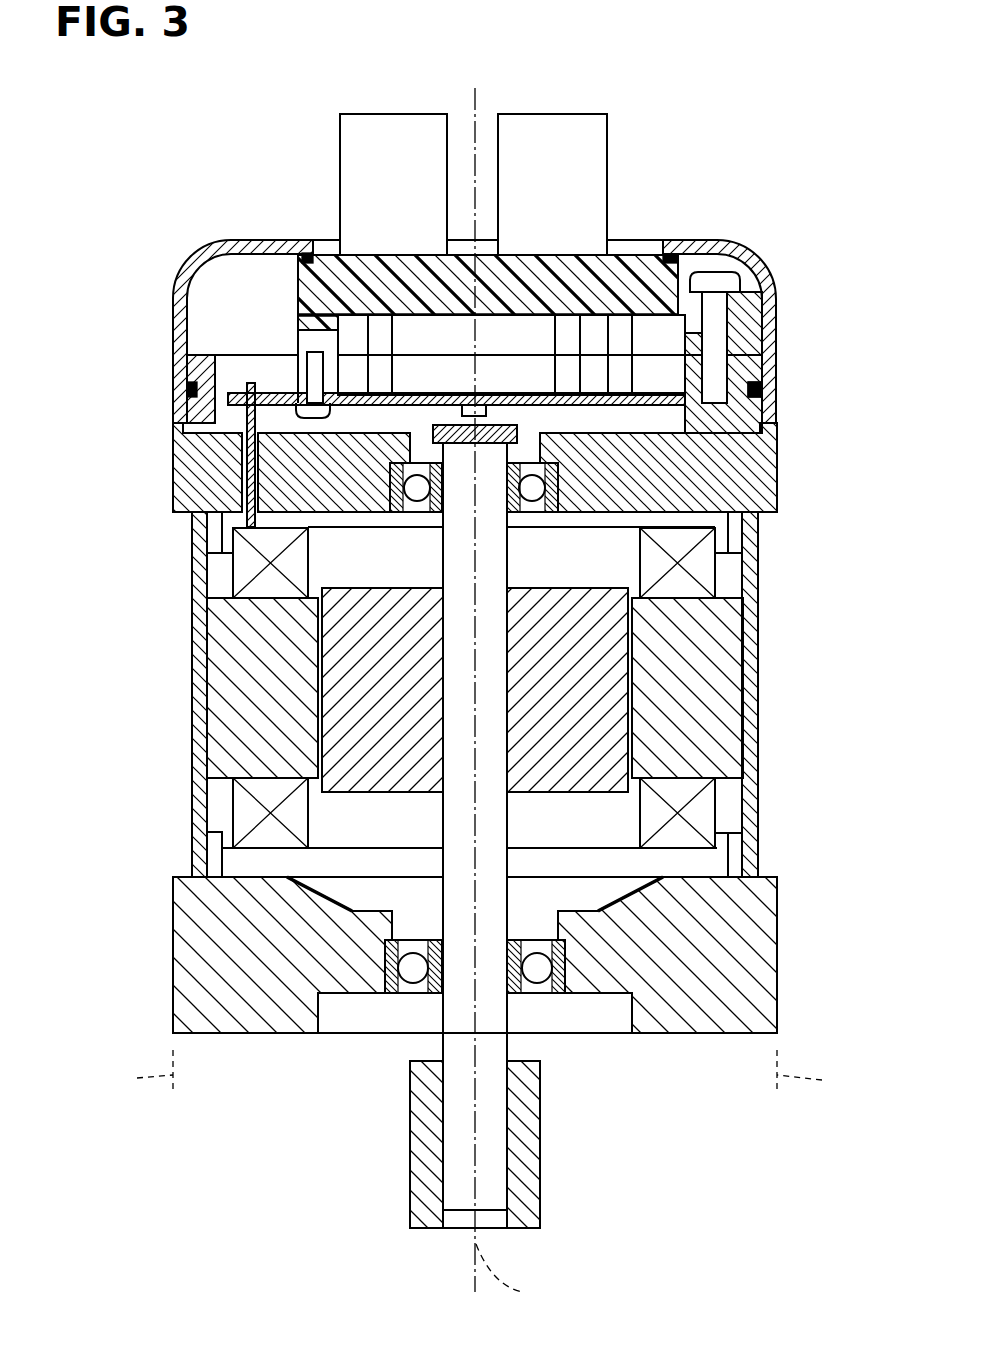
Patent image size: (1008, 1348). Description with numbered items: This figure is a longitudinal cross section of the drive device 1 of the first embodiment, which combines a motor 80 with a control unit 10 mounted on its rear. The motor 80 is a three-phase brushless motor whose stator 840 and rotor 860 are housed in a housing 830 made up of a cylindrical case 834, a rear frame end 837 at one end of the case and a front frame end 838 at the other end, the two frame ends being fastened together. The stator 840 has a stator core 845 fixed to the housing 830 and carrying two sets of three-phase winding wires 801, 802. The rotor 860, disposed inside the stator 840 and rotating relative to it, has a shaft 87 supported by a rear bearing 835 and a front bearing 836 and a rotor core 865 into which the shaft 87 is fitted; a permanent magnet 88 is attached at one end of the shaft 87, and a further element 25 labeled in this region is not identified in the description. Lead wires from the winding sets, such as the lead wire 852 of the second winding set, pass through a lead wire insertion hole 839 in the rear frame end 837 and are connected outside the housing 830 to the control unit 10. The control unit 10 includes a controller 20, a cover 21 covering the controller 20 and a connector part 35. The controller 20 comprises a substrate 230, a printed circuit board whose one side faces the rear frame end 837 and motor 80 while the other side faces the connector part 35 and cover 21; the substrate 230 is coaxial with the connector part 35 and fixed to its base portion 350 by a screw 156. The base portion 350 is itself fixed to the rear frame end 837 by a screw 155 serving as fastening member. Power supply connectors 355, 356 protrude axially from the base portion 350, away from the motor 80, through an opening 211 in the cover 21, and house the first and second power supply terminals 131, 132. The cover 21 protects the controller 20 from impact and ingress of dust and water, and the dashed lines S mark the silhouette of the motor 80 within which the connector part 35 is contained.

The drive device 1 is at (203, 170).
The control unit 10 is at (203, 240).
The cover 21 is at (705, 242).
The opening 211 is at (333, 242).
The screw 155 is at (720, 278).
The connector part 35 is at (388, 106).
The power supply connector 355 is at (345, 155).
The power supply connector 356 is at (598, 158).
The base portion 350 is at (615, 262).
The first power supply terminal 131 is at (335, 330).
The second power supply terminal 132 is at (622, 345).
The screw 156 is at (313, 367).
The substrate 230 is at (251, 390).
The lead wire 852 is at (238, 412).
The lead wire insertion hole 839 is at (252, 460).
The controller 20 is at (684, 397).
The rear frame end 837 is at (738, 455).
The rear bearing 835 is at (532, 488).
The nut 25 is at (463, 412).
The permanent magnet 88 is at (433, 433).
The housing 830 is at (762, 615).
The cylindrical case 834 is at (750, 655).
The stator 840 is at (232, 792).
The stator core 845 is at (248, 662).
The first set of winding wires 801 is at (248, 575).
The second set of winding wires 802 is at (700, 568).
The rotor core 865 is at (352, 710).
The rotor 860 is at (333, 794).
The shaft 87 is at (458, 752).
The motor 80 is at (172, 944).
The front frame end 838 is at (750, 990).
The front bearing 836 is at (538, 969).